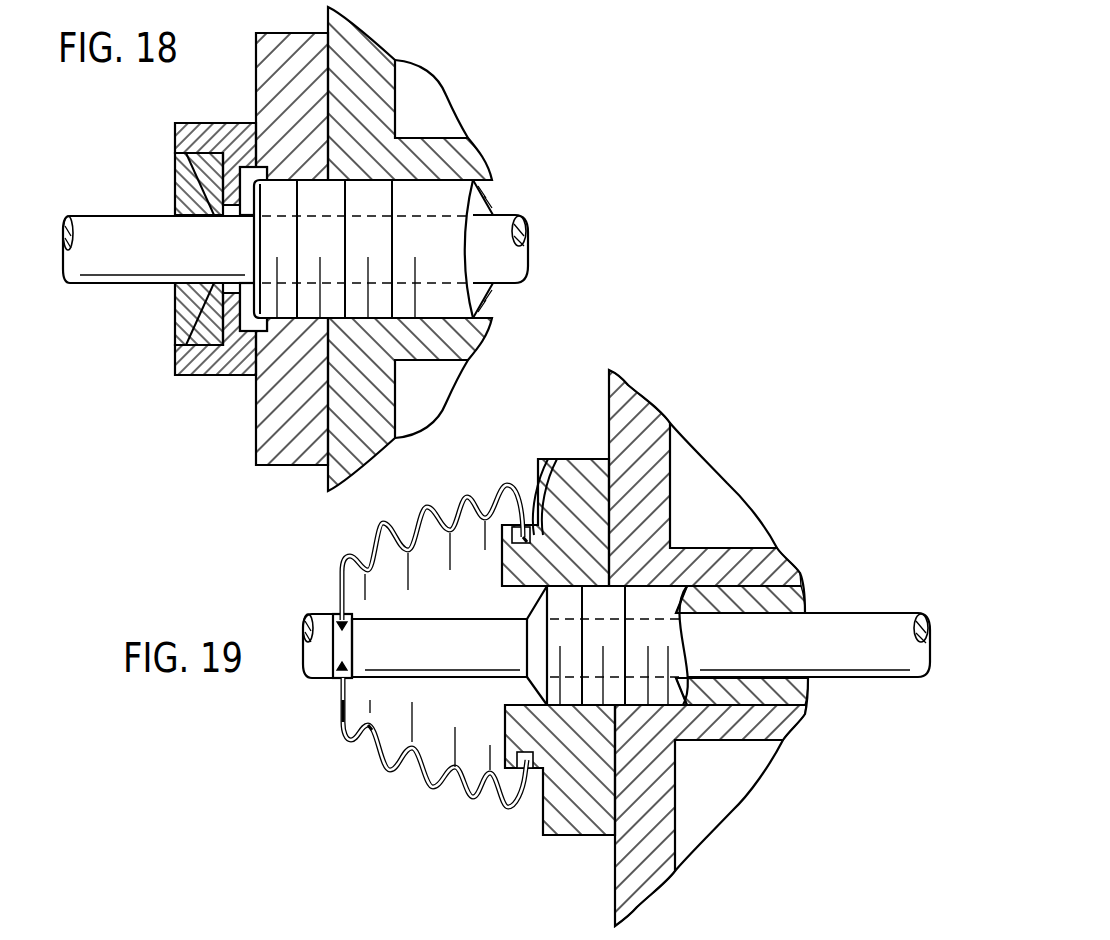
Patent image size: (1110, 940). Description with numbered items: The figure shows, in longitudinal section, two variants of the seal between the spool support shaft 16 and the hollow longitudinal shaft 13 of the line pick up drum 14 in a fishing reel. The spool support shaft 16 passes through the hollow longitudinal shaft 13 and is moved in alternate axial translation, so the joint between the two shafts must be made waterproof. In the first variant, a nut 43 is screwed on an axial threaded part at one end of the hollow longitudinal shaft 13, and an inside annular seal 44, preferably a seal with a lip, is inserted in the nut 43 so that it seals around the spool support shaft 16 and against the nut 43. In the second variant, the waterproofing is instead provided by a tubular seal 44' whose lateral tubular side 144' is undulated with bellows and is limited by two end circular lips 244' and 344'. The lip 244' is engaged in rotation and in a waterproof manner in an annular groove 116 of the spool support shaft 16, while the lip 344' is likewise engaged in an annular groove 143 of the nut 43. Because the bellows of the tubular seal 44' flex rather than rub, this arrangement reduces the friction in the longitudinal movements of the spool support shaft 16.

In FIG. 18, the hollow longitudinal shaft 13 is at (452, 202).
In FIG. 18, the line pick up drum 14 is at (365, 37).
In FIG. 19, the line pick up drum 14 is at (660, 442).
In FIG. 18, the spool support shaft 16 is at (100, 228).
In FIG. 19, the spool support shaft 16 is at (300, 640).
In FIG. 18, the nut 43 is at (280, 63).
In FIG. 19, the nut 43 is at (572, 822).
In FIG. 18, the inside annular seal 44 is at (188, 246).
In FIG. 19, the annular groove of the nut 143 is at (557, 462).
In FIG. 19, the end circular lip 344' is at (475, 502).
In FIG. 19, the end circular lip 244' is at (315, 754).
In FIG. 19, the lateral tubular side 144' is at (337, 793).
In FIG. 19, the tubular seal 44' is at (434, 680).
In FIG. 19, the annular groove of the shaft 116 is at (343, 672).